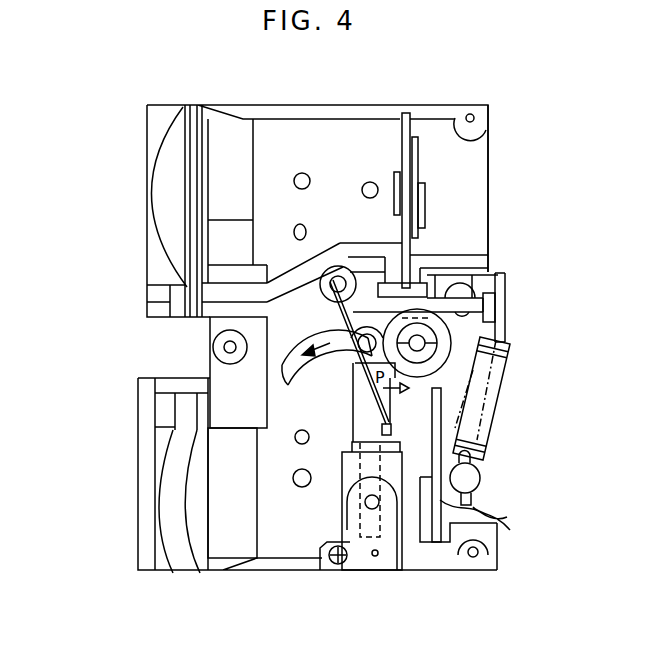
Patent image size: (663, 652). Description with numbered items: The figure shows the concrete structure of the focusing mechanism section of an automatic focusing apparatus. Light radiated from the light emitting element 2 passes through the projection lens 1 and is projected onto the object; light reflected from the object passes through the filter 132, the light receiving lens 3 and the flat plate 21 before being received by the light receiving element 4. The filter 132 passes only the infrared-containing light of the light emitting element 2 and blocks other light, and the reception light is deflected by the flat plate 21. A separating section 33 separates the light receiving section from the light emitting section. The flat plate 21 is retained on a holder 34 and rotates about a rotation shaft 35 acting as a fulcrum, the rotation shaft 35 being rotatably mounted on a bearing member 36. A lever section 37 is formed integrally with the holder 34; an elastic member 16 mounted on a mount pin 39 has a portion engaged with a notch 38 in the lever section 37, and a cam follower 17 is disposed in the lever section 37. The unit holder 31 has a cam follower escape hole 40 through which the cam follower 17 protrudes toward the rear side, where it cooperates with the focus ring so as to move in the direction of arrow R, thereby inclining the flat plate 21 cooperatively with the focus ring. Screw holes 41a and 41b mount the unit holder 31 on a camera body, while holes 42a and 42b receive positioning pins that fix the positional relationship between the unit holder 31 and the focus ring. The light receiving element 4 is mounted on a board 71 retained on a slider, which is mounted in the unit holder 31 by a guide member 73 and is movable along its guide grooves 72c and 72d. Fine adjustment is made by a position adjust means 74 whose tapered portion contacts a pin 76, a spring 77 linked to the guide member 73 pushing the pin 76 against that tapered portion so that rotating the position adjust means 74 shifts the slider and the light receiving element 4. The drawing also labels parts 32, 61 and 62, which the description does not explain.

The projection lens 1 is at (150, 150).
The light emitting element 2 is at (396, 172).
The light receiving lens 3 is at (157, 460).
The light receiving element 4 is at (416, 525).
The elastic member 16 is at (346, 320).
The cam follower 17 is at (369, 334).
The flat plate 21 is at (362, 571).
The unit holder 31 is at (535, 175).
The guide rods 32 is at (182, 308).
The separating section 33 is at (293, 295).
The holder 34 is at (342, 490).
The rotation shaft 35 is at (362, 505).
The bearing member 36 is at (382, 563).
The lever section 37 is at (353, 415).
The notch 38 is at (385, 432).
The mount pin 39 is at (342, 266).
The cam follower escape hole 40 is at (292, 377).
The screw hole 41a is at (294, 482).
The screw hole 41b is at (300, 173).
The positioning pin hole 42a is at (296, 473).
The positioning pin hole 42b is at (295, 226).
The plate 61 is at (419, 160).
The bar 62 is at (402, 113).
The board 71 is at (437, 543).
The guide groove 72c is at (480, 312).
The guide groove 72d is at (505, 512).
The guide member 73 is at (470, 297).
The position adjust means 74 is at (472, 383).
The pin 76 is at (490, 303).
The spring 77 is at (498, 420).
The filter 132 is at (152, 530).